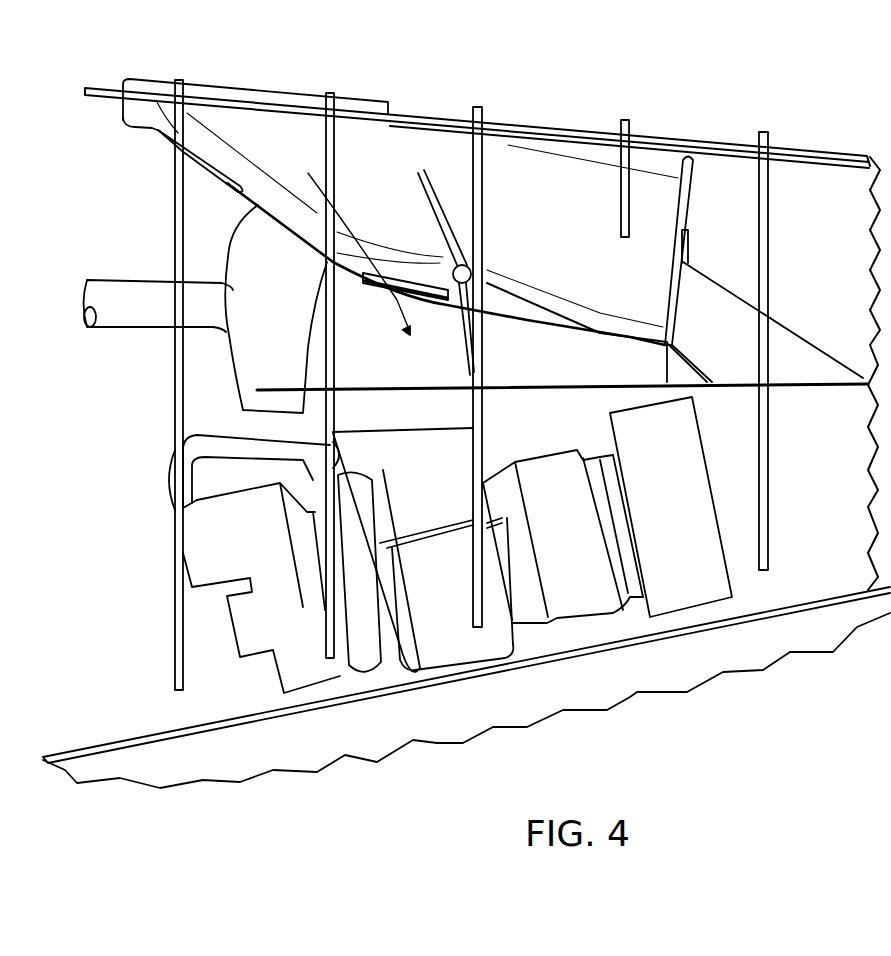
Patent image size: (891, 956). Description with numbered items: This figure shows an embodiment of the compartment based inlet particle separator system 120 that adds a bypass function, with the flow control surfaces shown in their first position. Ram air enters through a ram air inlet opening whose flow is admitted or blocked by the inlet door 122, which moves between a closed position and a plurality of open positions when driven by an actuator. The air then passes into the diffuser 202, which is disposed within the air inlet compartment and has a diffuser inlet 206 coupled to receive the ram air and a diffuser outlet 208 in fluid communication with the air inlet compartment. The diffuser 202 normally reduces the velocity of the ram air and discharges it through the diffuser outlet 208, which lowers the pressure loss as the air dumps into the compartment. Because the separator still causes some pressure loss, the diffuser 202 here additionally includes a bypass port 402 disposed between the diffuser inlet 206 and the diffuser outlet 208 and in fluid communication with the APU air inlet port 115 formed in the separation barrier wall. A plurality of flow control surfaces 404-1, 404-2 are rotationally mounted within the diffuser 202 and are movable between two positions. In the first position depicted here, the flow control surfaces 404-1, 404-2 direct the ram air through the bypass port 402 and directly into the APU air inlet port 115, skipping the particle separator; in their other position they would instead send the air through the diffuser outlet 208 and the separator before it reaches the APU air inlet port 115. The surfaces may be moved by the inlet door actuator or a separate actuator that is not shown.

The APU air inlet port 115 is at (386, 390).
The compartment based inlet particle separator system 120 is at (672, 133).
The inlet door 122 is at (587, 610).
The diffuser 202 is at (532, 167).
The diffuser inlet 206 is at (252, 88).
The diffuser outlet 208 is at (687, 212).
The bypass port 402 is at (377, 280).
The flow control surface 404-1 is at (426, 195).
The flow control surface 404-2 is at (465, 328).